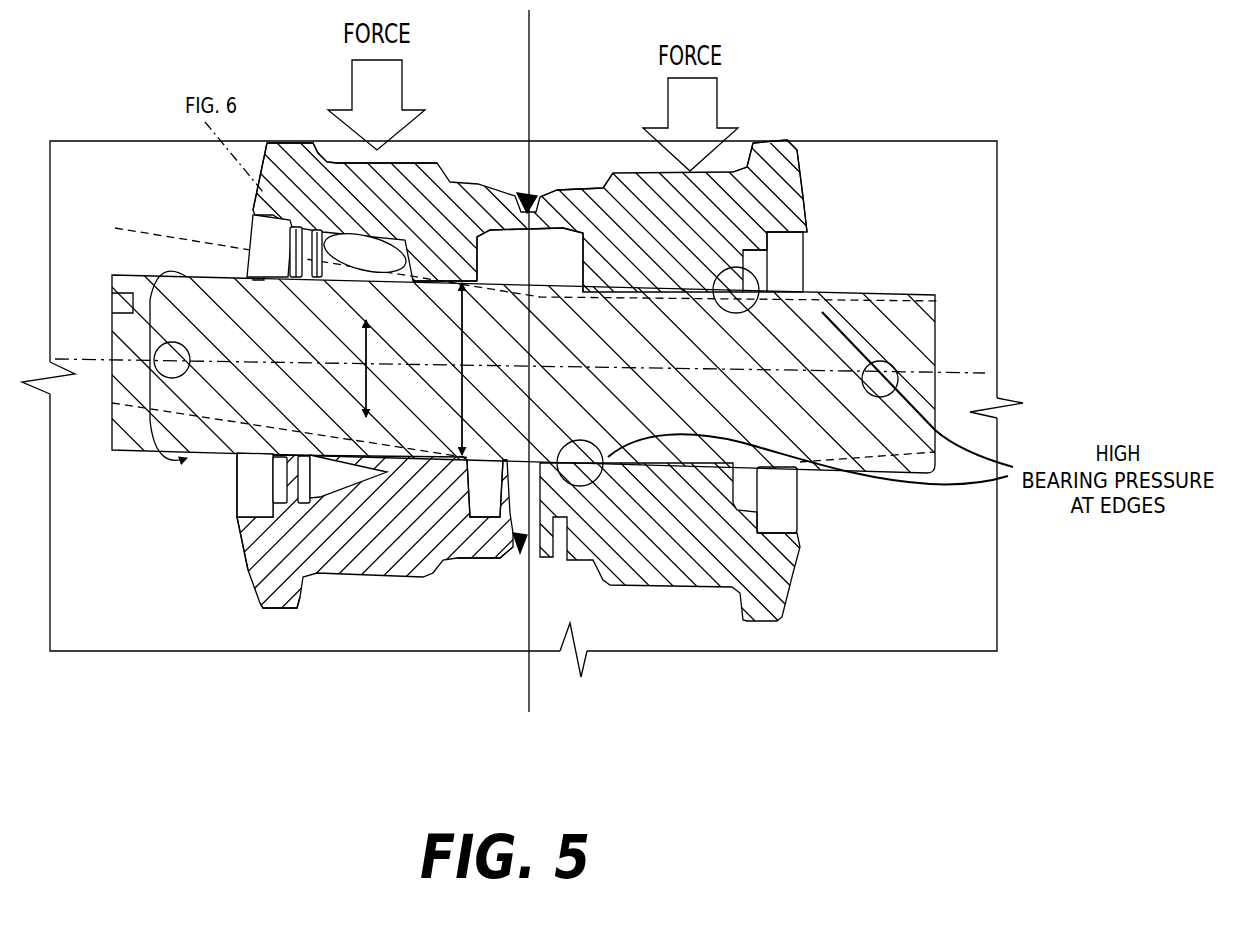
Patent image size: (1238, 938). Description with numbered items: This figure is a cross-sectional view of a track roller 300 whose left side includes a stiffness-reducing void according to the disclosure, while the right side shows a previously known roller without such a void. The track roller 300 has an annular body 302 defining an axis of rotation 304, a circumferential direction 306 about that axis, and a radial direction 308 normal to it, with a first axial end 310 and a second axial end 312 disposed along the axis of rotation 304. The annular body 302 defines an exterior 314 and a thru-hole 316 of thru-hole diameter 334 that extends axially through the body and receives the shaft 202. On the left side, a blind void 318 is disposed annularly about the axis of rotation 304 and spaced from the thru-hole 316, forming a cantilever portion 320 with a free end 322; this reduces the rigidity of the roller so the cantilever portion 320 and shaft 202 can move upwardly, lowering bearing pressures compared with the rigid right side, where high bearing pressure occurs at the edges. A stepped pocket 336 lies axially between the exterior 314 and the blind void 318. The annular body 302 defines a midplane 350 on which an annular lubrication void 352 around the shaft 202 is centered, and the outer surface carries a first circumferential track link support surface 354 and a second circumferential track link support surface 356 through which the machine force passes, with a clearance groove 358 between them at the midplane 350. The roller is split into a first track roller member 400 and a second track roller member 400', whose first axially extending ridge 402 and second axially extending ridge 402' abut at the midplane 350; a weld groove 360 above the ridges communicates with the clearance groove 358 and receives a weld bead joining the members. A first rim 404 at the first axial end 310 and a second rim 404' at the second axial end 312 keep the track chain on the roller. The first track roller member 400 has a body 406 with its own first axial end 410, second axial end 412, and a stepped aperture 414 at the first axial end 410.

The shaft 202 is at (928, 330).
The track roller 300 is at (808, 165).
The annular body 302 is at (810, 205).
The axis of rotation 304 is at (985, 373).
The circumferential direction 306 is at (183, 268).
The radial direction 308 is at (368, 349).
The first axial end 310 is at (252, 212).
The second axial end 312 is at (812, 231).
The exterior 314 is at (243, 240).
The thru-hole 316 is at (452, 280).
The blind void 318 is at (357, 258).
The cantilever portion 320 is at (372, 284).
The free end 322 is at (316, 230).
The thru-hole diameter 334 is at (460, 457).
The stepped pocket 336 is at (268, 483).
The midplane 350 is at (543, 628).
The annular lubrication void 352 is at (557, 258).
The first circumferential track link support surface 354 is at (336, 163).
The second circumferential track link support surface 356 is at (747, 155).
The clearance groove 358 is at (592, 186).
The weld groove 360 is at (555, 197).
The first track roller member 400 is at (382, 574).
The second track roller member 400' is at (676, 530).
The first axially extending ridge 402 is at (509, 141).
The second axially extending ridge 402' is at (492, 418).
The first rim 404 is at (286, 101).
The second rim 404' is at (775, 85).
The body 406 is at (277, 613).
The first axial end 410 is at (238, 470).
The second axial end 412 is at (519, 555).
The stepped aperture 414 is at (275, 500).